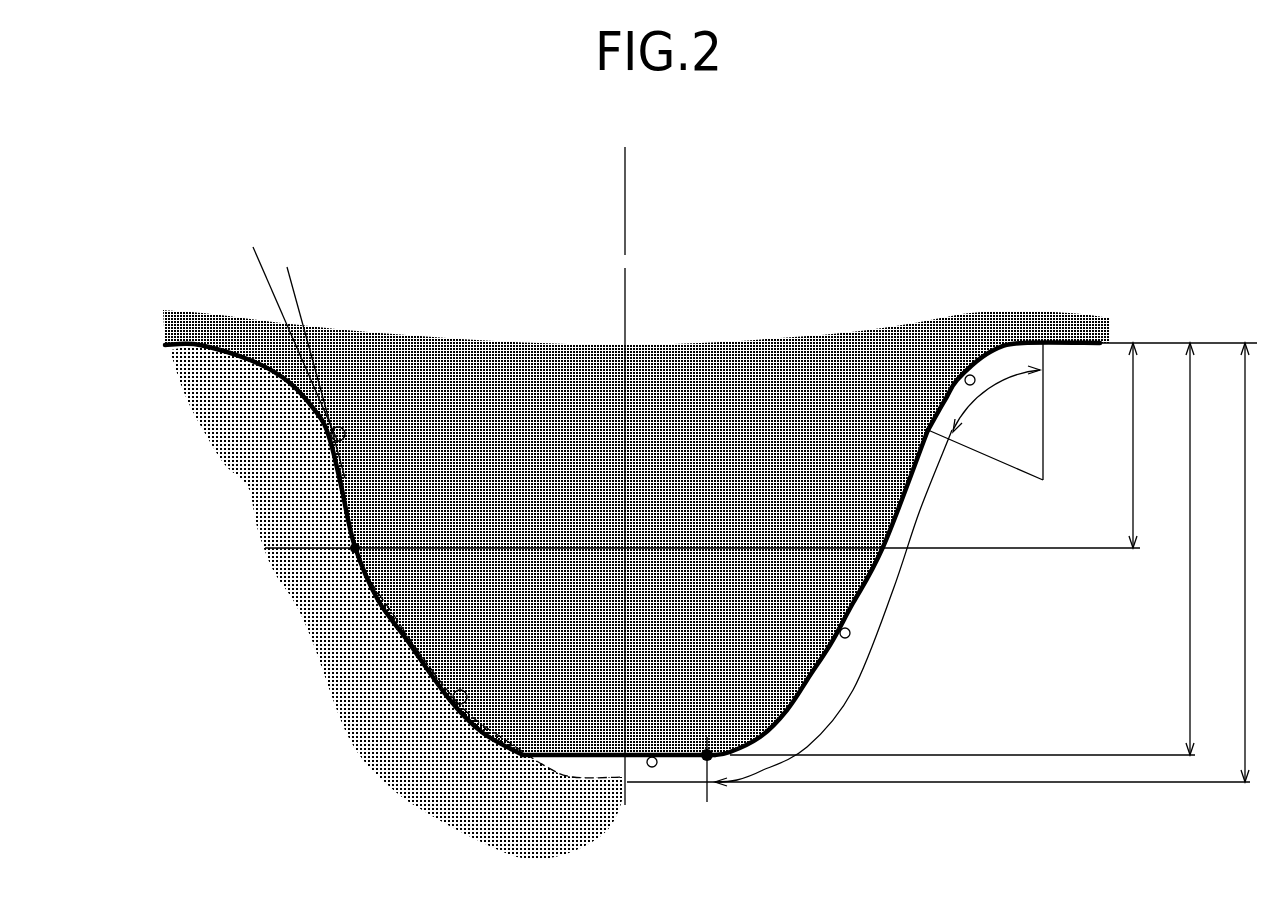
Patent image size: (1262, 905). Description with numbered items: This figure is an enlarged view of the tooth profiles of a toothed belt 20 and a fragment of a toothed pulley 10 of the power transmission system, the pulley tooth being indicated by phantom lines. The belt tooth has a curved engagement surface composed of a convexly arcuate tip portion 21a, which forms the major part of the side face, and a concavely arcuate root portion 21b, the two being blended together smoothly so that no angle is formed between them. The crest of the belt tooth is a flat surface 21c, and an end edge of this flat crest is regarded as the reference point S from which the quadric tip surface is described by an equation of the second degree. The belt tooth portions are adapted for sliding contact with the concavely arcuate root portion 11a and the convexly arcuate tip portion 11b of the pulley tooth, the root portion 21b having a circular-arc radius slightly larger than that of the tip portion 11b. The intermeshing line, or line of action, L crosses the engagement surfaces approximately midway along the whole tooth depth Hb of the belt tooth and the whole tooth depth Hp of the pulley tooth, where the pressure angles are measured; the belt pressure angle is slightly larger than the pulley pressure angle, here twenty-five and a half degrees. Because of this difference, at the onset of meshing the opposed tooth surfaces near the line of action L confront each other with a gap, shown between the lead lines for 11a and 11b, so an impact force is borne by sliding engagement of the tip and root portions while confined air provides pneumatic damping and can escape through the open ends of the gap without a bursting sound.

The toothed pulley 10 is at (378, 660).
The concavely arcuate root portion 11a is at (453, 703).
The convexly arcuate tip portion 11b is at (317, 430).
The toothed belt 20 is at (700, 501).
The convexly arcuate tip portion 21a is at (842, 633).
The concavely arcuate root portion 21b is at (966, 375).
The flat surface 21c is at (656, 755).
The intermeshing line L is at (691, 551).
The reference point S is at (706, 760).
The whole tooth depth of the belt tooth Hb is at (1102, 438).
The whole tooth depth of the pulley tooth Hp is at (1241, 562).